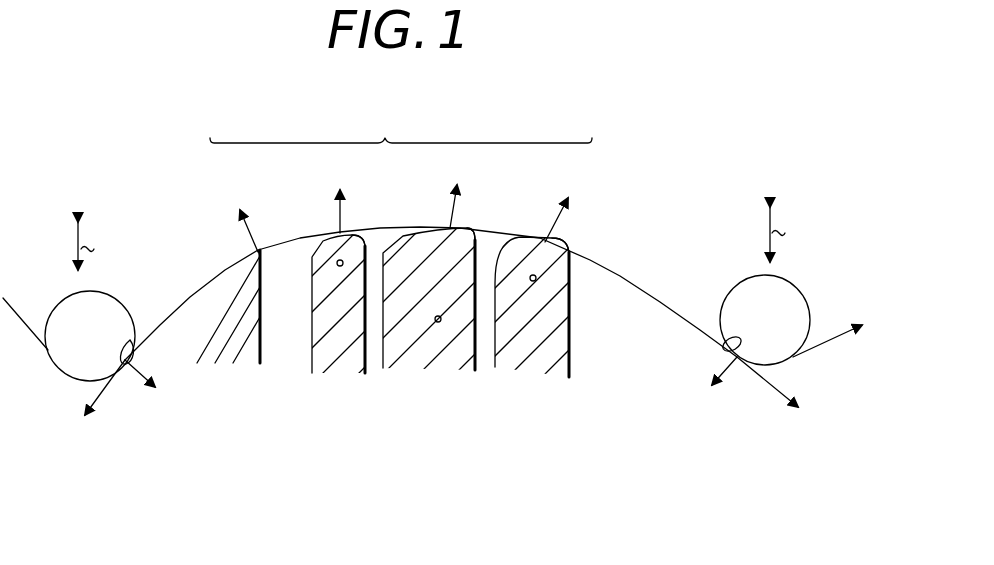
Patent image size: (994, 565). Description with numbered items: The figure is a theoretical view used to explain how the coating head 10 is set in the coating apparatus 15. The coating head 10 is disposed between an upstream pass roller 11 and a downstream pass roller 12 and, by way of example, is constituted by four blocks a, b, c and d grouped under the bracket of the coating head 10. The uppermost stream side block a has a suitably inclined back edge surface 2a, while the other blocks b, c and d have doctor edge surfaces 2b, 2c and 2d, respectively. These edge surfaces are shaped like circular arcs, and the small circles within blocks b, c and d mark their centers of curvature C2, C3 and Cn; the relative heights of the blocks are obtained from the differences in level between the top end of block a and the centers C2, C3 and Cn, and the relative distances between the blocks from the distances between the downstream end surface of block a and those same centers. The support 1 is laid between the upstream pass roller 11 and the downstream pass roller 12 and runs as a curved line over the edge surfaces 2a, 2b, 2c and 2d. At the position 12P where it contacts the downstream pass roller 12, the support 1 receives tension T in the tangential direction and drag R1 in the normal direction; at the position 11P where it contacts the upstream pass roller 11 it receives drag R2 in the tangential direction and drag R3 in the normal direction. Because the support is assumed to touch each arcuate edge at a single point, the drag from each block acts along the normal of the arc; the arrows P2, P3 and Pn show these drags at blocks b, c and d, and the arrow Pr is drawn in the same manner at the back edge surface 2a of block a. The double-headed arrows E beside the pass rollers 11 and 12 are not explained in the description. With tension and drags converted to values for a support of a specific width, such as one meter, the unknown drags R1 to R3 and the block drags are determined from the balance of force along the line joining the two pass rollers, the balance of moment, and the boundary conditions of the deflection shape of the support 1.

The support 1 is at (638, 281).
The back edge surface 2a is at (228, 310).
The doctor edge surface 2b is at (355, 233).
The doctor edge surface 2c is at (468, 230).
The doctor edge surface 2d is at (568, 242).
The coating head 10 is at (401, 127).
The upstream pass roller 11 is at (62, 313).
The position of contact with the upstream pass roller 11P is at (130, 340).
The downstream pass roller 12 is at (788, 300).
The position of contact with the downstream pass roller 12P is at (722, 346).
The coating apparatus 15 is at (678, 157).
The uppermost stream side block a is at (243, 338).
The block b is at (338, 338).
The block c is at (412, 337).
The block d is at (525, 348).
The center of curvature C2 is at (337, 265).
The center of curvature C3 is at (439, 322).
The center of curvature Cn is at (536, 280).
The pressure direction at first block Pr is at (242, 216).
The drag P2 is at (341, 201).
The drag P3 is at (463, 195).
The drag Pn is at (568, 209).
The drag R1 is at (711, 386).
The drag R2 is at (96, 404).
The drag R3 is at (157, 385).
The tension T is at (775, 397).
The vertical adjustment direction E is at (439, 238).